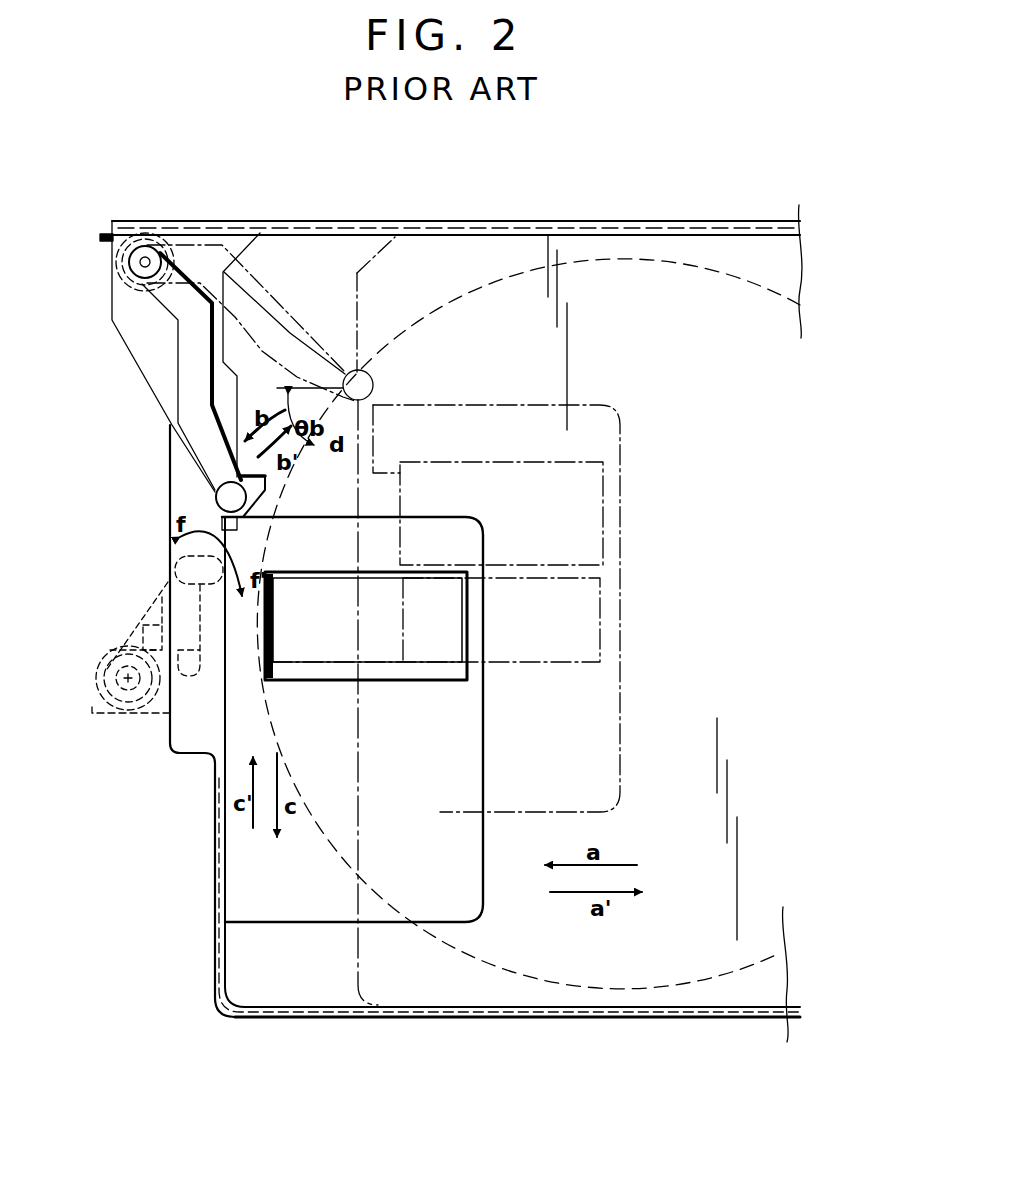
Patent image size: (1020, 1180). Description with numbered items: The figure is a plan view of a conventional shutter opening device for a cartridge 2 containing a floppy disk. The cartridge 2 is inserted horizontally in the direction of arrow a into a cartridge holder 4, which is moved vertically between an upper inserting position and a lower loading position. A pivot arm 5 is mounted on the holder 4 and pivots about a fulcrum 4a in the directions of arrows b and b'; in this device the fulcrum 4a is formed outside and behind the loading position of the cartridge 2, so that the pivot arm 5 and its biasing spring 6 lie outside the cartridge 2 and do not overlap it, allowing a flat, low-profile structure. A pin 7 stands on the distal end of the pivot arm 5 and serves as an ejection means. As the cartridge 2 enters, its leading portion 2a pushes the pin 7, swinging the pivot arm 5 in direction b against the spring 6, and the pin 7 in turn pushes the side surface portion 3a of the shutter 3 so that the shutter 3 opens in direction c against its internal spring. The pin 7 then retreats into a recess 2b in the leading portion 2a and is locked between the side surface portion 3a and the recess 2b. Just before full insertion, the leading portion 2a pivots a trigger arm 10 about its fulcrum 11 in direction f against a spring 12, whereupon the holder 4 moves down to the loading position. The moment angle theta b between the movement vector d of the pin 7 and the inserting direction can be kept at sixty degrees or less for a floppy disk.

The cartridge 2 is at (360, 1000).
The leading portion 2a is at (237, 381).
The recess 2b is at (215, 490).
The shutter 3 is at (222, 879).
The side surface portion 3a is at (375, 397).
The cartridge holder 4 is at (257, 232).
The fulcrum 4a is at (145, 257).
The pivot arm 5 is at (187, 421).
The spring 6 is at (102, 234).
The pin 7 is at (250, 500).
The trigger arm 10 is at (146, 613).
The fulcrum 11 is at (104, 677).
The spring 12 is at (105, 715).